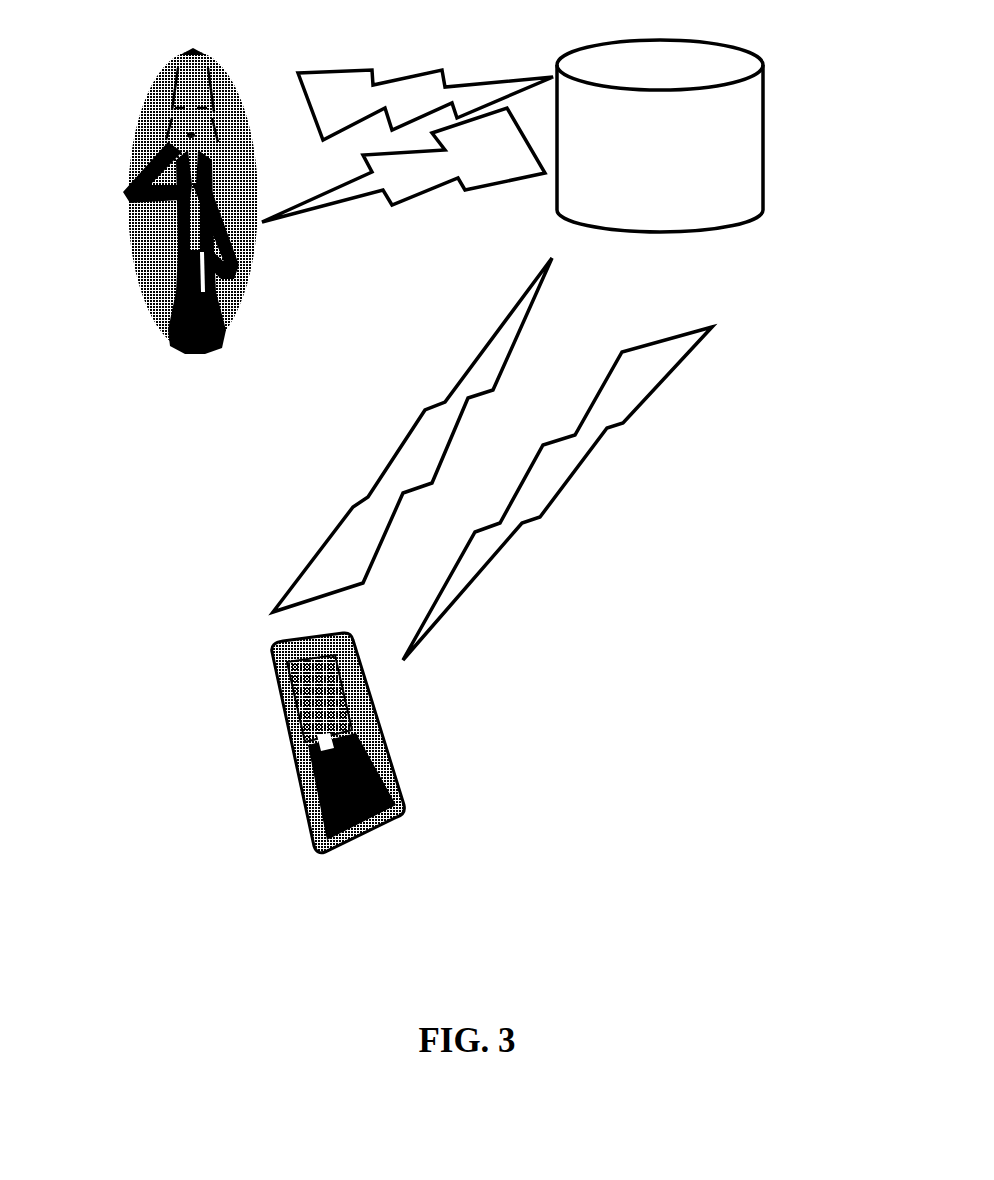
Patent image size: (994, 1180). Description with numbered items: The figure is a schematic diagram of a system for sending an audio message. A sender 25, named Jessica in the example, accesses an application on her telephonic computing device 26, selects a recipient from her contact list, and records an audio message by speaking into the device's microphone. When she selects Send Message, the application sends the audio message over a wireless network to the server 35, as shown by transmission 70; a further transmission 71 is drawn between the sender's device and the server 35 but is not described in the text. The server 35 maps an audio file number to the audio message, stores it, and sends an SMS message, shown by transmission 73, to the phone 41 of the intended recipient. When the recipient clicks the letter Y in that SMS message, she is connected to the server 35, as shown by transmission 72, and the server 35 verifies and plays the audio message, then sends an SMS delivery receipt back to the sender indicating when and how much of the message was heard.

The sender 25 is at (210, 63).
The telephonic computing device 26 is at (175, 123).
The transmission 70 is at (373, 73).
The wireless transmission from server to user 71 is at (392, 205).
The server 35 is at (748, 217).
The transmission 72 is at (368, 495).
The transmission 73 is at (540, 517).
The phone 41 is at (402, 782).